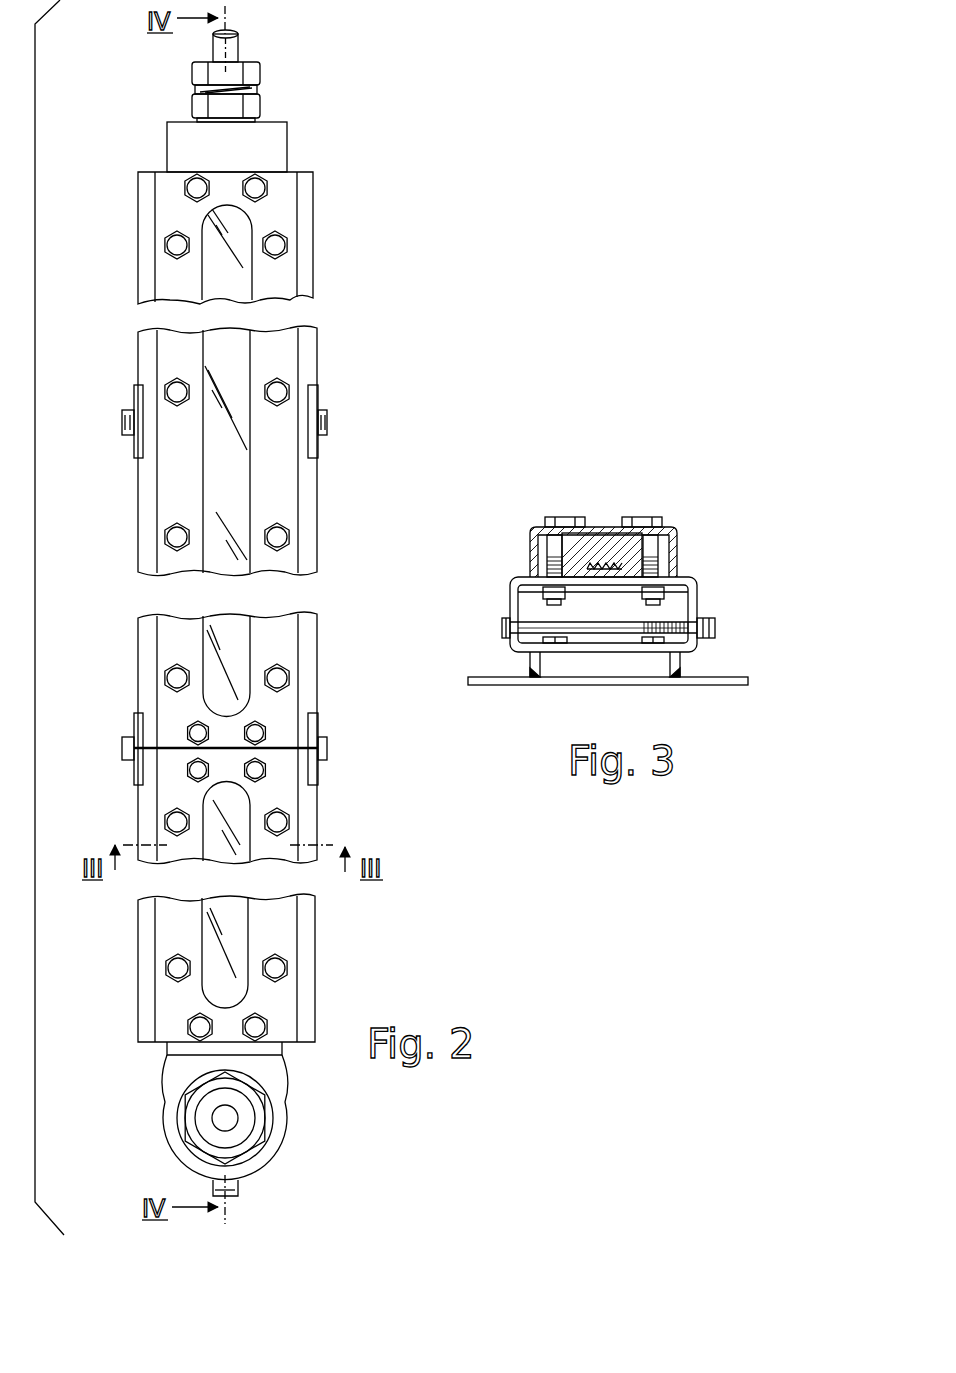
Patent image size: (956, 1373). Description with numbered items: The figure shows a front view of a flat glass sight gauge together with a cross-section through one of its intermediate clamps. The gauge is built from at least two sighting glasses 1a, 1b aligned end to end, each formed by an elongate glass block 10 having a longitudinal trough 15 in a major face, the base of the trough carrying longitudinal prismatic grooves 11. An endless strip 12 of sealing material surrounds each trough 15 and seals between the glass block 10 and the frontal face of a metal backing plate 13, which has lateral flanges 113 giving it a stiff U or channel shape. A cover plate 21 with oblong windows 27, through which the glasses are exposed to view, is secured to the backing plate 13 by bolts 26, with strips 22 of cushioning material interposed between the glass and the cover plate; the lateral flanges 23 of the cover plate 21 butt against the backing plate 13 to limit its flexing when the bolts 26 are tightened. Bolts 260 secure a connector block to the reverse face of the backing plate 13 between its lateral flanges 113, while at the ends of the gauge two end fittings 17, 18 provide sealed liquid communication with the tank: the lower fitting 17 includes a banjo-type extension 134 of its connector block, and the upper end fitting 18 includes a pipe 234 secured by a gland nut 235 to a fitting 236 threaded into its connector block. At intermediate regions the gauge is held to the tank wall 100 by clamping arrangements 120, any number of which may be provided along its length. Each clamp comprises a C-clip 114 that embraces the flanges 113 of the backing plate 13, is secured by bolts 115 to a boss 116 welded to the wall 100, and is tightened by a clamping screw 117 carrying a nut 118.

In FIG. 2, the sighting glass 1a is at (226, 943).
In FIG. 2, the sighting glass 1b is at (269, 518).
In FIG. 2, the upper end fitting 18 is at (250, 76).
In FIG. 2, the pipe 234 is at (240, 55).
In FIG. 2, the gland nut 235 is at (262, 73).
In FIG. 2, the fitting 236 is at (258, 106).
In FIG. 2, the oblong window 27 is at (243, 284).
In FIG. 3, the oblong window 27 is at (608, 528).
In FIG. 2, the cover plate 21 is at (282, 358).
In FIG. 3, the cover plate 21 is at (614, 535).
In FIG. 2, the bolt 26 is at (280, 540).
In FIG. 3, the bolt 26 is at (660, 516).
In FIG. 2, the nut 118 is at (133, 412).
In FIG. 3, the nut 118 is at (708, 635).
In FIG. 2, the clamping screw 117 is at (326, 414).
In FIG. 3, the clamping screw 117 is at (537, 630).
In FIG. 2, the clamp 120 is at (325, 447).
In FIG. 2, the C-clip 114 is at (136, 445).
In FIG. 3, the C-clip 114 is at (512, 641).
In FIG. 2, the bolt 260 is at (258, 770).
In FIG. 3, the bolt 260 is at (654, 522).
In FIG. 2, the end fitting 17 is at (286, 1124).
In FIG. 2, the banjo-type extension 134 is at (272, 1152).
In FIG. 3, the lateral flange 23 is at (534, 530).
In FIG. 3, the glass block 10 is at (546, 528).
In FIG. 3, the strip of cushioning material 22 is at (578, 538).
In FIG. 3, the longitudinal trough 15 is at (603, 561).
In FIG. 3, the backing plate 13 is at (703, 580).
In FIG. 3, the lateral flange 113 is at (697, 592).
In FIG. 3, the endless strip of sealing material 12 is at (658, 598).
In FIG. 3, the longitudinal prismatic groove 11 is at (592, 602).
In FIG. 3, the bolt 115 is at (650, 640).
In FIG. 3, the boss 116 is at (657, 668).
In FIG. 3, the tank wall 100 is at (733, 683).